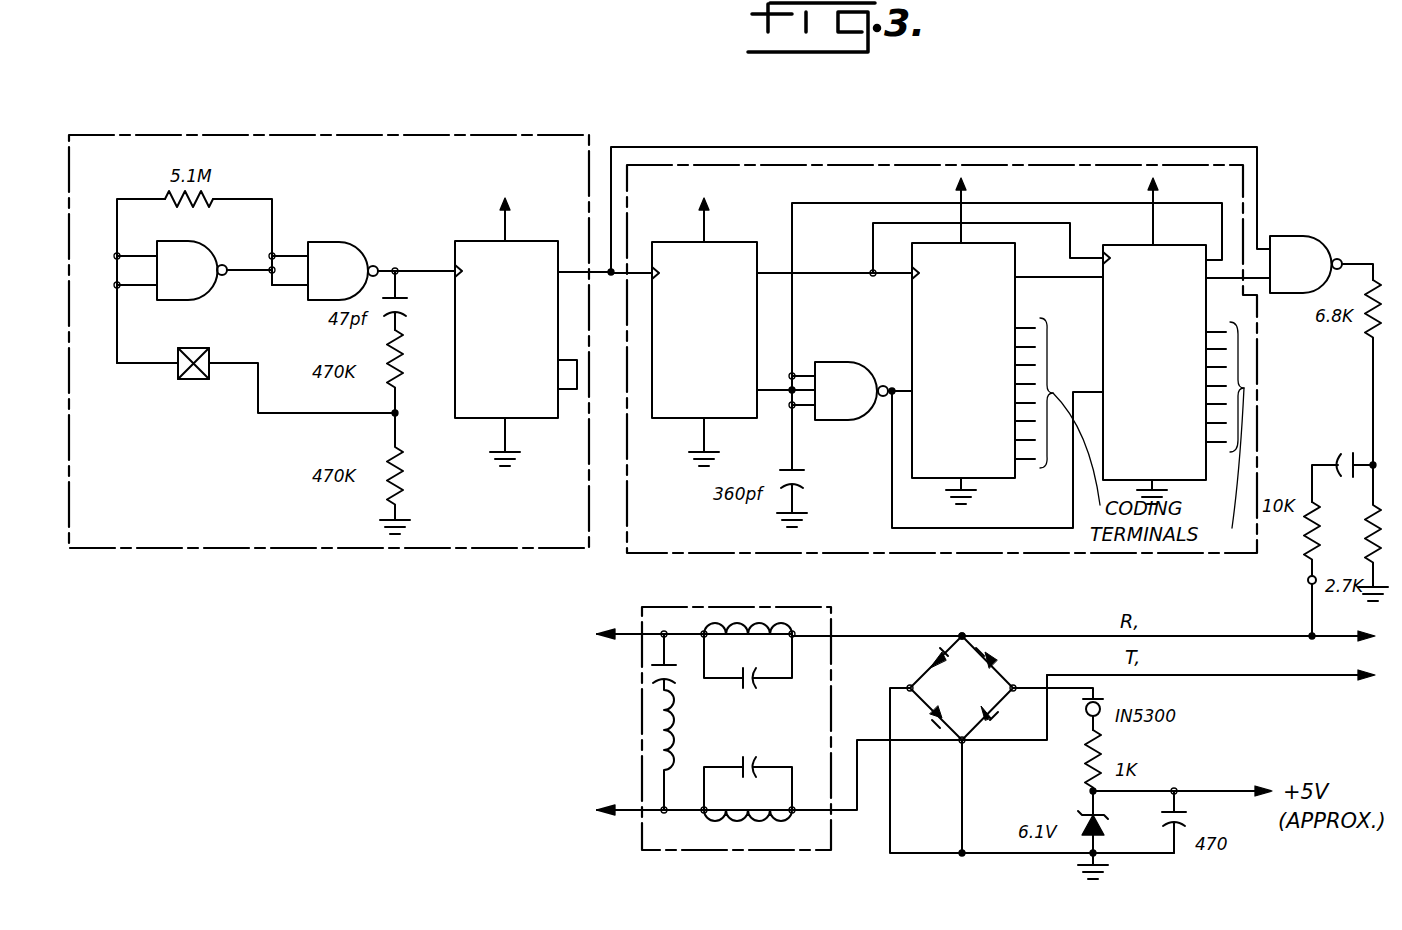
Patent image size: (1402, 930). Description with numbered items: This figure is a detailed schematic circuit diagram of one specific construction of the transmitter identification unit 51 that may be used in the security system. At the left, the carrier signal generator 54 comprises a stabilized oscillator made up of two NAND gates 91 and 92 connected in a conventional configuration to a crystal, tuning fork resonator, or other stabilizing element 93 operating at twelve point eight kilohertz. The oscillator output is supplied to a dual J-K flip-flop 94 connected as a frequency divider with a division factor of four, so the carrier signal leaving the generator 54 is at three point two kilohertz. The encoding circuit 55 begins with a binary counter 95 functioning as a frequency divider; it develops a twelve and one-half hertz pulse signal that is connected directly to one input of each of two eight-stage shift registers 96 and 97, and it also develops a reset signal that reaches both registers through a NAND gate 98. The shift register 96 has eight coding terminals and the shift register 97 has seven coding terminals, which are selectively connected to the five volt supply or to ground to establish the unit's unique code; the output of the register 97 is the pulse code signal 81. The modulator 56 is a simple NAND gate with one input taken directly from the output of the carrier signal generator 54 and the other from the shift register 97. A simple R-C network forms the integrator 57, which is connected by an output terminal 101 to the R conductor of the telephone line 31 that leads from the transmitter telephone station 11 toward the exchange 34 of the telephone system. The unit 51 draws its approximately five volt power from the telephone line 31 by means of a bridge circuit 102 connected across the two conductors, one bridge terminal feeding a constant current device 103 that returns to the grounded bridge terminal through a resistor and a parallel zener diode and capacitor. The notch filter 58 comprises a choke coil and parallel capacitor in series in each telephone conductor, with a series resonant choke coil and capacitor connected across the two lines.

The transmitter identification unit 51 is at (815, 80).
The carrier signal generator 54 is at (500, 550).
The encoding circuit 55 is at (1030, 553).
The modulator 56 is at (1303, 236).
The integrator 57 is at (1353, 460).
The notch filter 58 is at (732, 850).
The pulse code signal 81 is at (1262, 282).
The NAND gate 91 is at (208, 241).
The NAND gate 92 is at (333, 242).
The stabilizing element 93 is at (205, 350).
The dual J-K flip-flop 94 is at (473, 241).
The binary counter 95 is at (725, 242).
The shift register 96 is at (912, 300).
The shift register 97 is at (1103, 330).
The NAND gate 98 is at (829, 420).
The output terminal 101 is at (1308, 582).
The bridge circuit 102 is at (922, 690).
The constant current device 103 is at (1086, 716).
The telephone line 31 is at (1086, 656).
The exchange 34 is at (1286, 673).
The telephone station 11 is at (549, 722).